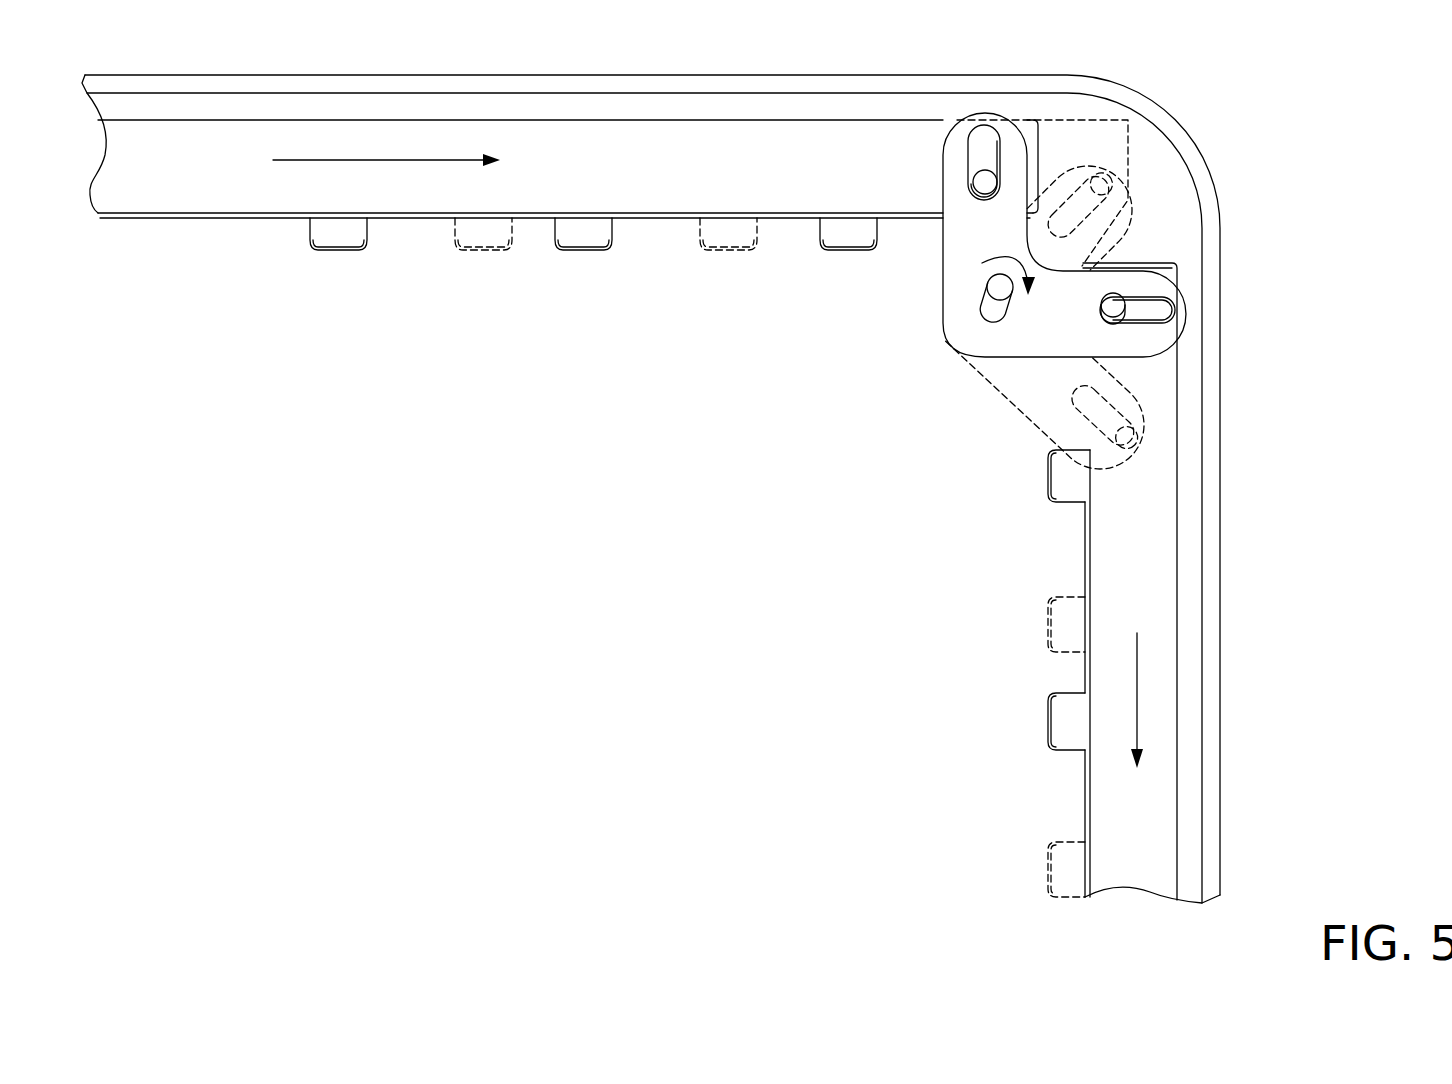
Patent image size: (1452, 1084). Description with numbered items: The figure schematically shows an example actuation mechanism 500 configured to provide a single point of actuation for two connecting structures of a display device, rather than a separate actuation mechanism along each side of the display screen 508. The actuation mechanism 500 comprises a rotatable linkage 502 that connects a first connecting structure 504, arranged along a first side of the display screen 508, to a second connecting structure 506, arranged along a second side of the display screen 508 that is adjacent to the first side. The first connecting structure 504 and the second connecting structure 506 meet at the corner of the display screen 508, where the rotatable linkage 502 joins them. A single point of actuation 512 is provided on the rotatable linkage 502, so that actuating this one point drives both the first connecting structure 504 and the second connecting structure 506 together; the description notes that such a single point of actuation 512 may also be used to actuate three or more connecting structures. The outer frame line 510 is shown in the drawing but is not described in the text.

The actuation mechanism 500 is at (1176, 222).
The rotatable linkage 502 is at (1066, 344).
The first connecting structure 504 is at (837, 179).
The second connecting structure 506 is at (1154, 532).
The display screen 508 is at (706, 416).
The outer frame rail 510 is at (1094, 79).
The single point of actuation 512 is at (984, 293).